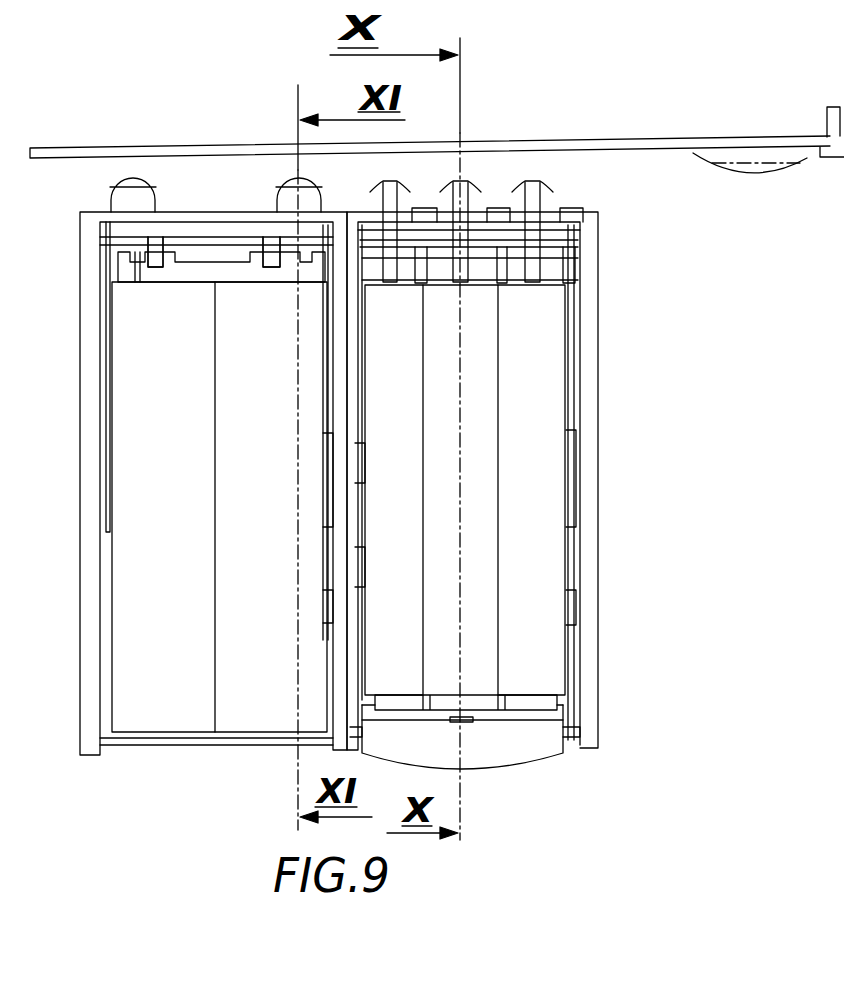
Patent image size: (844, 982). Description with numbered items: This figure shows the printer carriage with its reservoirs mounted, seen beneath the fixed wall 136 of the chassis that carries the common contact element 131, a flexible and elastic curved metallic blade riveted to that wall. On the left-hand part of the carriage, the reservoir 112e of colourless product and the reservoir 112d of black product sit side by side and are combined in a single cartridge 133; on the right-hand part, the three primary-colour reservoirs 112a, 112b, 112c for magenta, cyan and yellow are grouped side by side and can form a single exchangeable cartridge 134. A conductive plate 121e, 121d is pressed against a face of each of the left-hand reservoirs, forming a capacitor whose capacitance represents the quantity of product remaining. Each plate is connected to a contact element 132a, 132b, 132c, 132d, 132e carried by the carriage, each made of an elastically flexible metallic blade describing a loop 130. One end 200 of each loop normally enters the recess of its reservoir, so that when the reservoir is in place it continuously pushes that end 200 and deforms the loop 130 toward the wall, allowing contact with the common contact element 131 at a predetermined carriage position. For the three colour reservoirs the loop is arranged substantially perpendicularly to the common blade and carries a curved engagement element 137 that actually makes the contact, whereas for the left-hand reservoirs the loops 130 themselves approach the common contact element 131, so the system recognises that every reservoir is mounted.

The loop 130 is at (135, 182).
The common contact element 131 is at (708, 165).
The fixed wall 136 is at (765, 140).
The curved engagement element 137 is at (410, 186).
The cartridge 133 is at (135, 510).
The exchangeable cartridge 134 is at (530, 505).
The end of the loop 200 is at (165, 283).
The contact element 132e is at (157, 228).
The contact element 132d is at (277, 228).
The contact element 132c is at (390, 250).
The contact element 132b is at (463, 250).
The contact element 132a is at (532, 255).
The conductive plate 121e is at (127, 452).
The conductive plate 121d is at (322, 433).
The reservoir 112e is at (163, 507).
The reservoir 112d is at (271, 507).
The reservoir 112c is at (394, 490).
The reservoir 112b is at (460, 490).
The reservoir 112a is at (531, 490).